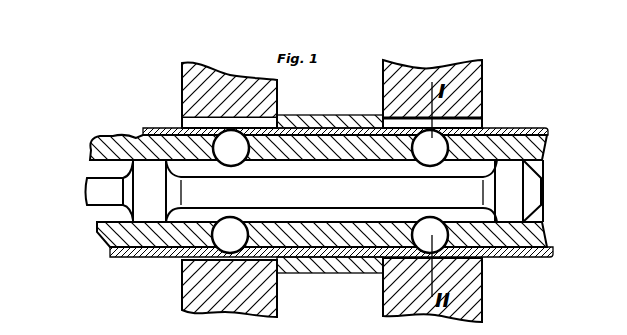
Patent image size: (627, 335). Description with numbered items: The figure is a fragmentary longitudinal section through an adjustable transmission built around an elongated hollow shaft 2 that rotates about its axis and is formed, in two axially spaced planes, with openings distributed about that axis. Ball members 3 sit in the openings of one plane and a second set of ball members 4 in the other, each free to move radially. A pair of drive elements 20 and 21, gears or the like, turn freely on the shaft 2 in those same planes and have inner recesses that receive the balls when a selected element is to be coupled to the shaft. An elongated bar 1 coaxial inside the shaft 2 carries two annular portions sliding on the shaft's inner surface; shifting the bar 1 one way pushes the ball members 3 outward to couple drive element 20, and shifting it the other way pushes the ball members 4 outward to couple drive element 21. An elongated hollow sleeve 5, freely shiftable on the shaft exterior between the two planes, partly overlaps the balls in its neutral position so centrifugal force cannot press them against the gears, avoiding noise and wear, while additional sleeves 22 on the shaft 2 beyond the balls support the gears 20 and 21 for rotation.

The elongated bar 1 is at (515, 197).
The elongated hollow shaft 2 is at (533, 147).
The ball members 3 is at (441, 142).
The ball members 4 is at (232, 146).
The elongated hollow sleeve 5 is at (300, 115).
The drive element 20 is at (462, 297).
The drive element 21 is at (195, 293).
The additional sleeves 22 is at (173, 128).